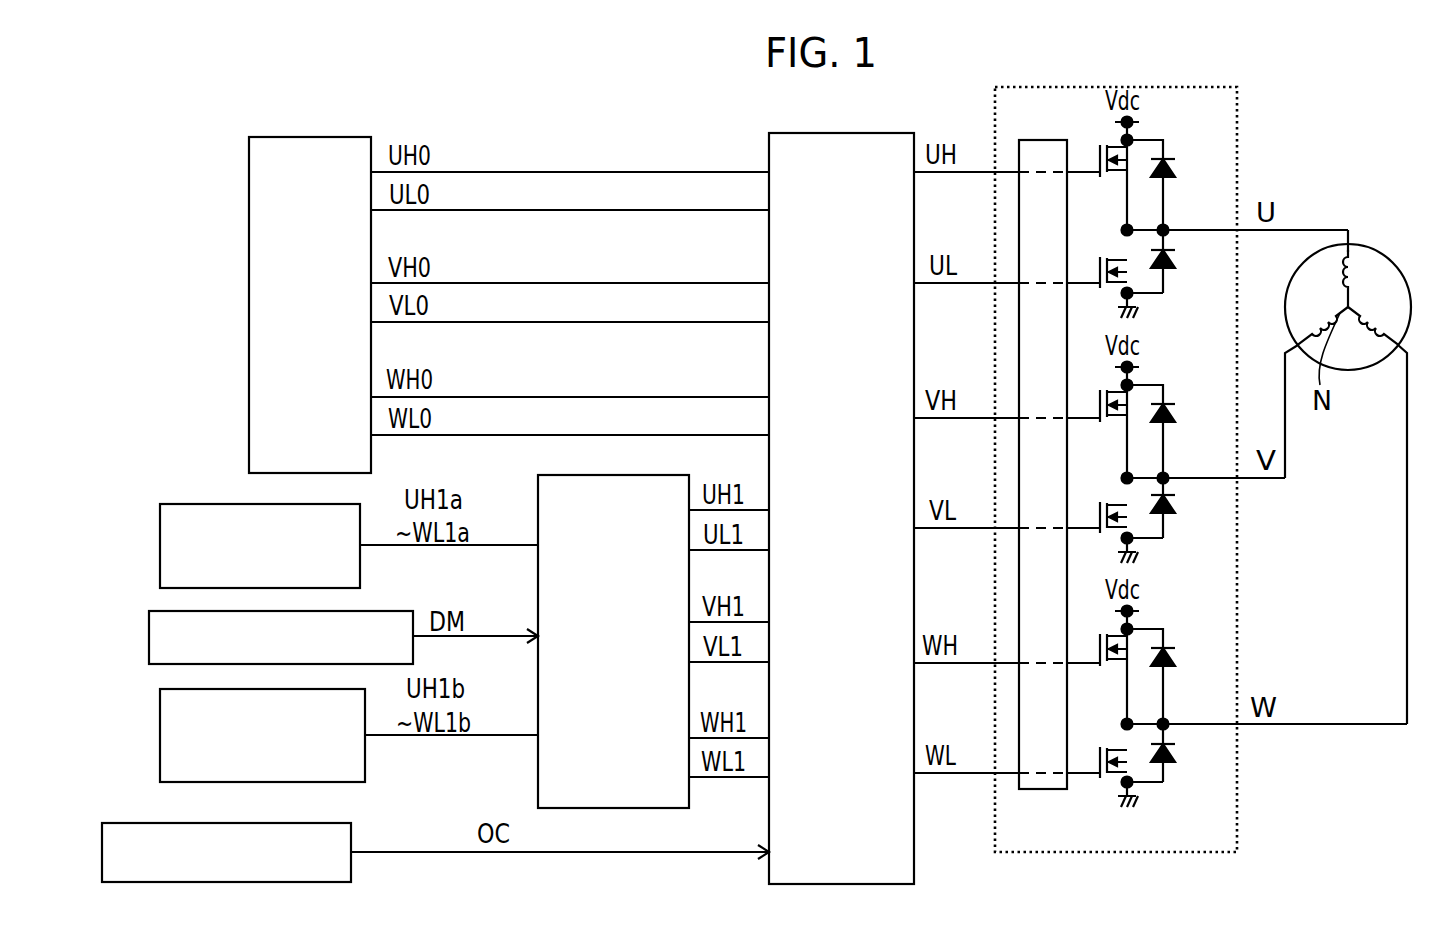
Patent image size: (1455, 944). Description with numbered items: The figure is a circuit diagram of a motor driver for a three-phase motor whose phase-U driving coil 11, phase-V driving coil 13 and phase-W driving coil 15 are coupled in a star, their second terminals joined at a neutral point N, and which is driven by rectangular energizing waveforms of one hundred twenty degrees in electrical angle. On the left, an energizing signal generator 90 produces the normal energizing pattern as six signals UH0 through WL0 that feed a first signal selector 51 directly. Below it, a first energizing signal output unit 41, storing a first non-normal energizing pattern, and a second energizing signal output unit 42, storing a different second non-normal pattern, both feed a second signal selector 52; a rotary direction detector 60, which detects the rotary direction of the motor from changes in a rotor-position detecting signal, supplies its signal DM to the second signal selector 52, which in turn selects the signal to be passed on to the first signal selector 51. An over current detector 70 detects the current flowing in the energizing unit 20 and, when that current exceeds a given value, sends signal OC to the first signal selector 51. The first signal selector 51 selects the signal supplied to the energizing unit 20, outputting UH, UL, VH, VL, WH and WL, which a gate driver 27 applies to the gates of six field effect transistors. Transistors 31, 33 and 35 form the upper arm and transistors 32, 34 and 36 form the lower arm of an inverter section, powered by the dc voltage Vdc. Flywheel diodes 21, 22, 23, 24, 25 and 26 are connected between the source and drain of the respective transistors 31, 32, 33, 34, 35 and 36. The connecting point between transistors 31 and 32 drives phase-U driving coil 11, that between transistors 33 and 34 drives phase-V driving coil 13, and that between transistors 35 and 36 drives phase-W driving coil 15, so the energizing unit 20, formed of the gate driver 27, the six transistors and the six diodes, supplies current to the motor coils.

The phase-U driving coil 11 is at (1358, 266).
The phase-V driving coil 13 is at (1306, 318).
The phase-W driving coil 15 is at (1390, 318).
The energizing unit 20 is at (1239, 770).
The flywheel diode 21 is at (1175, 160).
The flywheel diode 22 is at (1172, 268).
The flywheel diode 23 is at (1175, 405).
The flywheel diode 24 is at (1172, 513).
The flywheel diode 25 is at (1175, 649).
The flywheel diode 26 is at (1172, 762).
The gate driver 27 is at (1046, 789).
The field effect transistor 31 is at (1110, 178).
The field effect transistor 32 is at (1110, 290).
The field effect transistor 33 is at (1110, 423).
The field effect transistor 34 is at (1110, 535).
The field effect transistor 35 is at (1110, 667).
The field effect transistor 36 is at (1110, 780).
The first energizing signal output unit 41 is at (160, 548).
The second energizing signal output unit 42 is at (160, 715).
The first signal selector 51 is at (790, 133).
The second signal selector 52 is at (538, 480).
The rotary direction detector 60 is at (149, 638).
The over current detector 70 is at (131, 823).
The energizing signal generator 90 is at (249, 402).